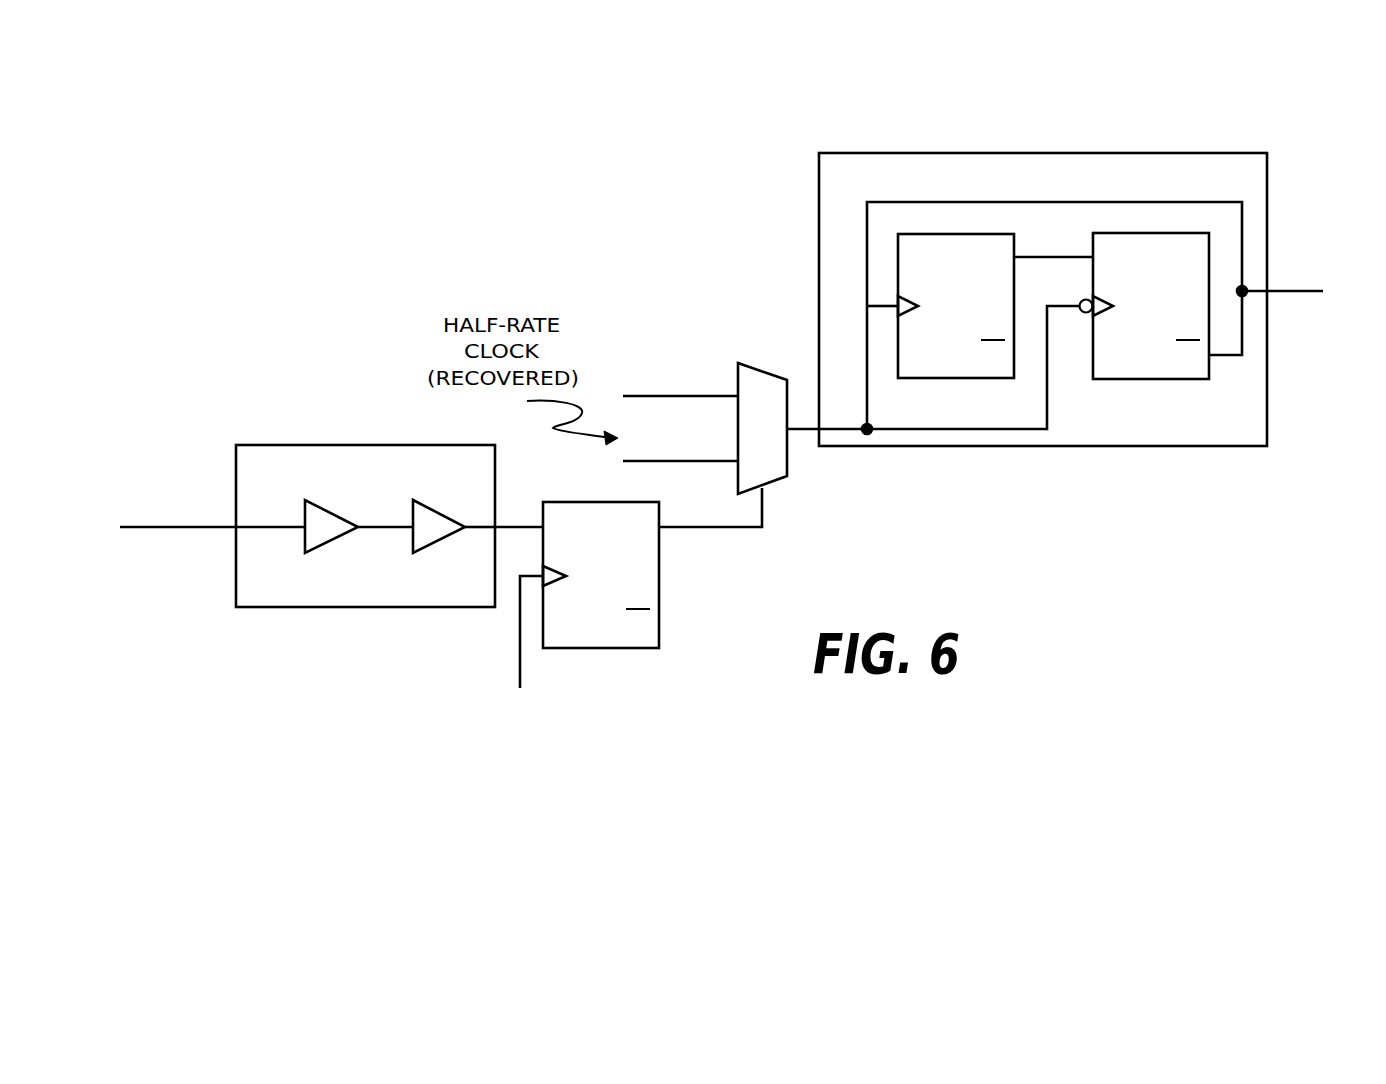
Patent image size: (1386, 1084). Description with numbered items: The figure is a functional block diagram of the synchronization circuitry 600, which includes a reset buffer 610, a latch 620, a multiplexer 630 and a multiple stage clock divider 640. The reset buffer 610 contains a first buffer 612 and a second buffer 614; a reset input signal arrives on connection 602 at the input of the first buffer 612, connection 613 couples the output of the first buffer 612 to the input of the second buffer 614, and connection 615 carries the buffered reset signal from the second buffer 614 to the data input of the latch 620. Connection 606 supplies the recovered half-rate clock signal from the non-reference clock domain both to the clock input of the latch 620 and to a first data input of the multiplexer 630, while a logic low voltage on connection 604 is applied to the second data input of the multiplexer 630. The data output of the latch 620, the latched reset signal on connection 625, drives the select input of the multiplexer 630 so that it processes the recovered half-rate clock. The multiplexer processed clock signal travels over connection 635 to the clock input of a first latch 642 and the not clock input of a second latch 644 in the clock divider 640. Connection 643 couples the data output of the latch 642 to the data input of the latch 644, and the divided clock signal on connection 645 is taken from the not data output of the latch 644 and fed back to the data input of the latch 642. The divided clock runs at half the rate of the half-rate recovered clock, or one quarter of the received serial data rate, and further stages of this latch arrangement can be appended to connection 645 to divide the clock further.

The synchronization circuitry 600 is at (1053, 137).
The connection 602 is at (140, 527).
The connection 604 is at (630, 395).
The connection 606 is at (520, 673).
The reset buffer 610 is at (365, 526).
The first buffer 612 is at (318, 513).
The connection 613 is at (375, 529).
The second buffer 614 is at (422, 515).
The connection 615 is at (512, 525).
The latch 620 is at (601, 575).
The connection 625 is at (764, 522).
The multiplexer 630 is at (802, 428).
The connection 635 is at (935, 428).
The clock divider 640 is at (1043, 299).
The first latch 642 is at (956, 306).
The connection 643 is at (1023, 255).
The second latch 644 is at (1151, 306).
The connection 645 is at (1282, 289).